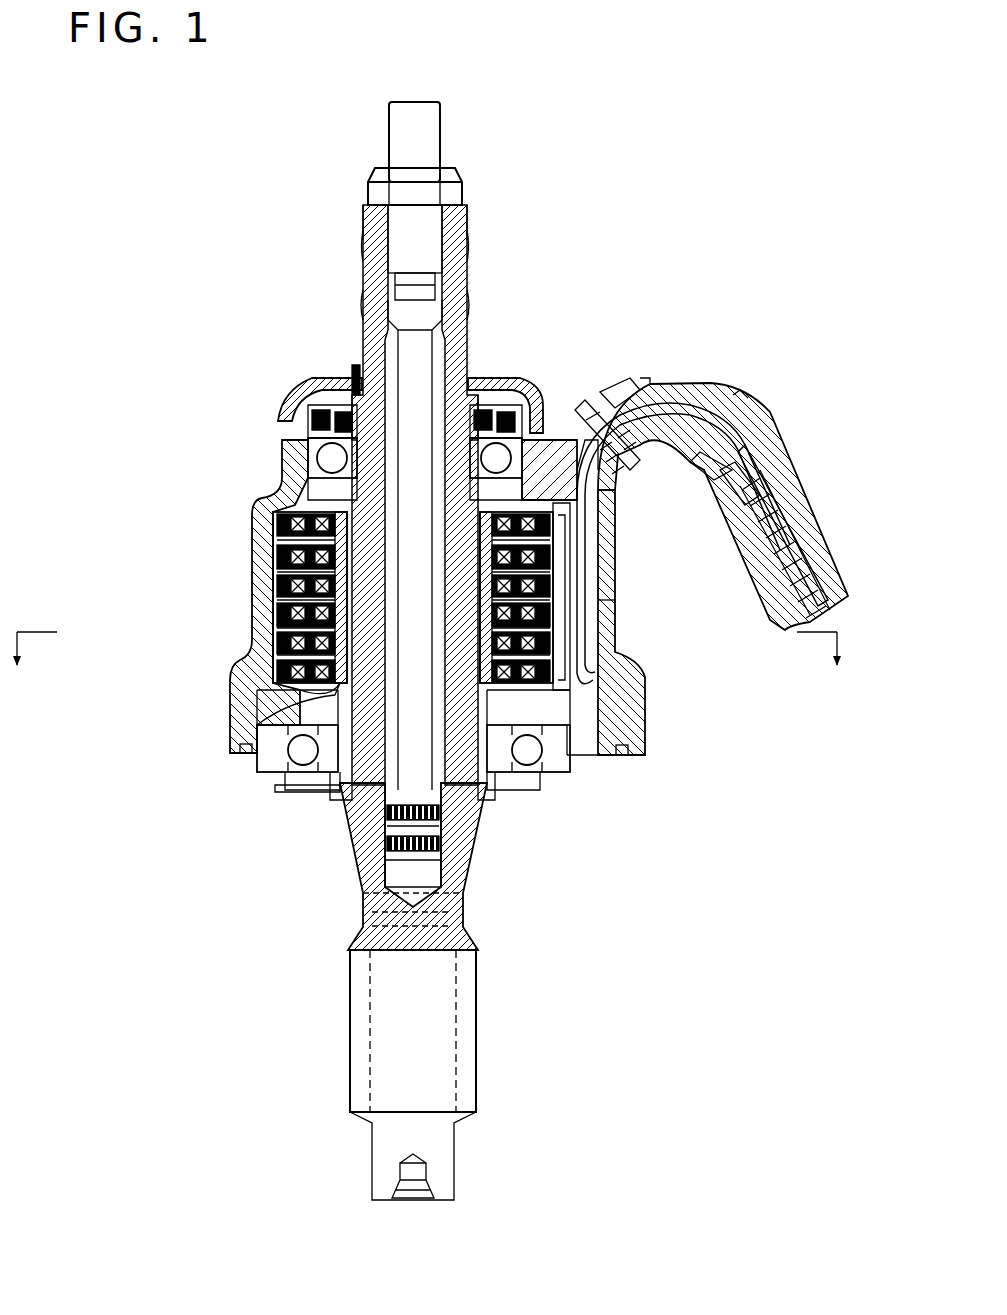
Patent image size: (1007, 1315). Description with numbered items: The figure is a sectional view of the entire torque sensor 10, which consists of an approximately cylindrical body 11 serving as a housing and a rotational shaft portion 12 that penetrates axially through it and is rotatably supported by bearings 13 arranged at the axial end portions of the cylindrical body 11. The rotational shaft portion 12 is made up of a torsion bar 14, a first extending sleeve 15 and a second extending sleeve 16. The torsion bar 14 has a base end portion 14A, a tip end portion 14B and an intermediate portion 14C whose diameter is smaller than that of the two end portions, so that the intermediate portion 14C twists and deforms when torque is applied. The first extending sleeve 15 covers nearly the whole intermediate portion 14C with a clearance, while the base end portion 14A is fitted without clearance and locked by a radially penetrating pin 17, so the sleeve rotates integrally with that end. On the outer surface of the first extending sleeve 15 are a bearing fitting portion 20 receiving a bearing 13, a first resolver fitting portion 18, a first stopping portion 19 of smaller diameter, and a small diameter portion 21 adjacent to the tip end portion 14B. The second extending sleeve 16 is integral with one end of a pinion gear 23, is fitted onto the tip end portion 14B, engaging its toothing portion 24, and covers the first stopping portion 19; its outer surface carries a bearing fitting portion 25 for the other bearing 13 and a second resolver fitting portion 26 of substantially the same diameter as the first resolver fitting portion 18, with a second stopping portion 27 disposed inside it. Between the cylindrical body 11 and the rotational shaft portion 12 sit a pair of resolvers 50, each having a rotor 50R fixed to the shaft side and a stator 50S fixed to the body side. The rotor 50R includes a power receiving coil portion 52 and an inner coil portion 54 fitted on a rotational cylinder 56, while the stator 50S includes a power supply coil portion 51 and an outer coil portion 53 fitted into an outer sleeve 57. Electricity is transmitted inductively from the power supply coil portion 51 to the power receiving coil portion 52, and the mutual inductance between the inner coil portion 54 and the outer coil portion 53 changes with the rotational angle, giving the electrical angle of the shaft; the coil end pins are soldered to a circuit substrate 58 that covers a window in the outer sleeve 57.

The torque sensor 10 is at (660, 134).
The cylindrical body 11 is at (278, 437).
The rotational shaft portion 12 is at (356, 321).
The bearing 13 is at (522, 402).
The torsion bar 14 is at (446, 366).
The base end portion 14A is at (430, 255).
The tip end portion 14B is at (422, 877).
The intermediate portion 14C is at (422, 346).
The first extending sleeve 15 is at (482, 236).
The second extending sleeve 16 is at (346, 872).
The pin 17 is at (440, 193).
The first resolver fitting portion 18 is at (300, 400).
The first stopping portion 19 is at (285, 786).
The bearing fitting portion 20 is at (362, 378).
The small diameter portion 21 is at (333, 785).
The pinion gear 23 is at (462, 1058).
The toothing portion 24 is at (440, 840).
The bearing fitting portion 25 is at (315, 793).
The second resolver fitting portion 26 is at (265, 700).
The second stopping portion 27 is at (300, 742).
The resolver 50 is at (112, 462).
The rotor 50R is at (180, 452).
The stator 50S is at (180, 508).
The power supply coil portion 51 is at (285, 580).
The power receiving coil portion 52 is at (290, 518).
The outer coil portion 53 is at (310, 600).
The inner coil portion 54 is at (300, 548).
The rotational cylinder 56 is at (548, 498).
The outer sleeve 57 is at (606, 622).
The circuit substrate 58 is at (588, 583).